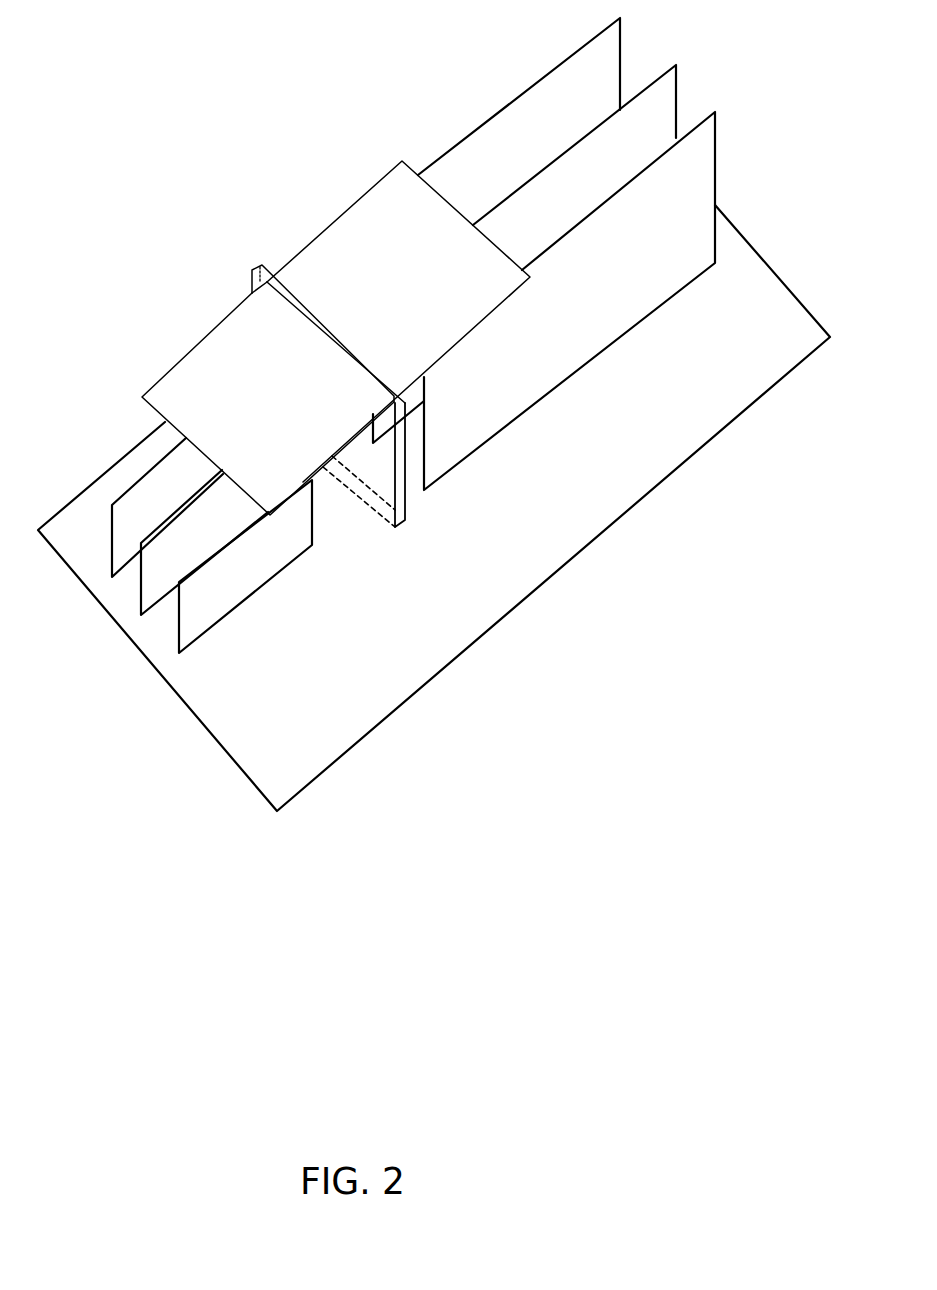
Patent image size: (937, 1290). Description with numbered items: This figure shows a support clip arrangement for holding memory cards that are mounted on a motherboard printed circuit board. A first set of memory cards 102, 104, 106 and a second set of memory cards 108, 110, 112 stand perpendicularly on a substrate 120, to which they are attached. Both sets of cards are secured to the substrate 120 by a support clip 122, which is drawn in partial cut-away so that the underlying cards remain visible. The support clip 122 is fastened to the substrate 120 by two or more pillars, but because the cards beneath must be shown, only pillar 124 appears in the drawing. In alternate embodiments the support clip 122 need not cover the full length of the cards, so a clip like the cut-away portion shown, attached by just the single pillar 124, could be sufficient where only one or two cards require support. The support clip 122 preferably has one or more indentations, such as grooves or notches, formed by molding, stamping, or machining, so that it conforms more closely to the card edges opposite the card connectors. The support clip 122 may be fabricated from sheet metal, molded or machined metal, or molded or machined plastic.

The memory card 102 is at (167, 507).
The memory card 104 is at (204, 542).
The memory card 106 is at (245, 566).
The memory card 108 is at (519, 105).
The memory card 110 is at (524, 254).
The memory card 112 is at (569, 301).
The substrate 120 is at (434, 508).
The support clip 122 is at (336, 338).
The pillar 124 is at (407, 487).